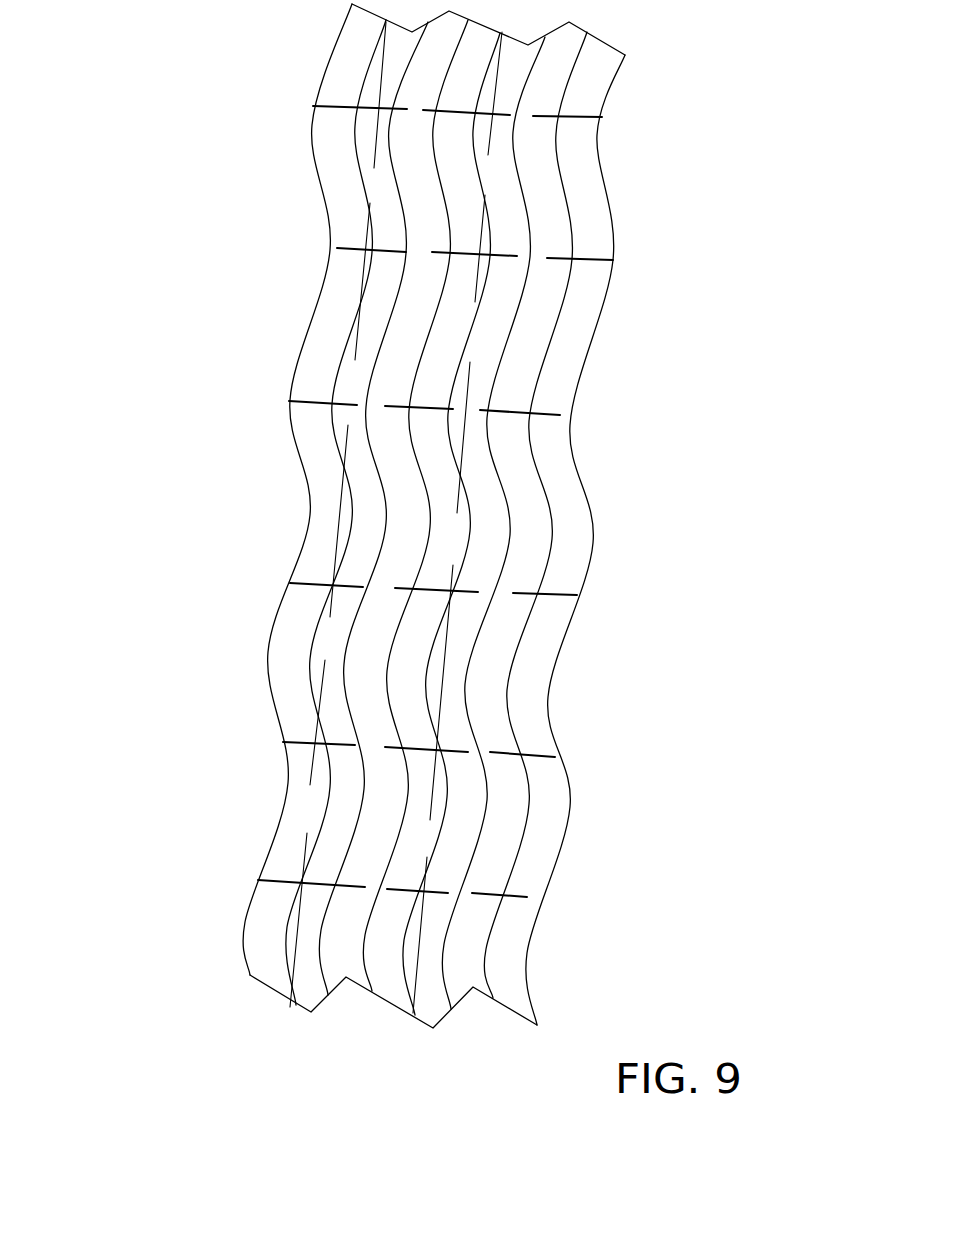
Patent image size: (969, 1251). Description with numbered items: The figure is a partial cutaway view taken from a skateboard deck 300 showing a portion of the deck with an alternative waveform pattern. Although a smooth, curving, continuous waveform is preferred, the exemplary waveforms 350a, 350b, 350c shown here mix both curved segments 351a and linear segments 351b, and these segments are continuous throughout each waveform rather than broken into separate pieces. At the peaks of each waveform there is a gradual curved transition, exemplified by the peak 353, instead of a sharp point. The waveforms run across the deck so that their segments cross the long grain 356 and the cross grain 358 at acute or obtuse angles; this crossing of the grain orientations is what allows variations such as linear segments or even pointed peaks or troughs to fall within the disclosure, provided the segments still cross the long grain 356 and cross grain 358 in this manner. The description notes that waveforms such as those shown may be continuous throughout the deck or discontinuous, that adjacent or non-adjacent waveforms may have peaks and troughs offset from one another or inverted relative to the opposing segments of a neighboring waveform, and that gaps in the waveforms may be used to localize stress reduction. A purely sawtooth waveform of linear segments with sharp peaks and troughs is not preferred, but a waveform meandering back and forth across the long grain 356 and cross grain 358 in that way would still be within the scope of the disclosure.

The deck 300 is at (183, 655).
The waveform 350a is at (297, 350).
The waveform 350b is at (307, 648).
The waveform 350c is at (323, 928).
The curved segment 351a is at (352, 123).
The linear segment 351b is at (358, 175).
The peak 353 is at (353, 523).
The long grain 356 is at (358, 275).
The cross grain 358 is at (307, 408).